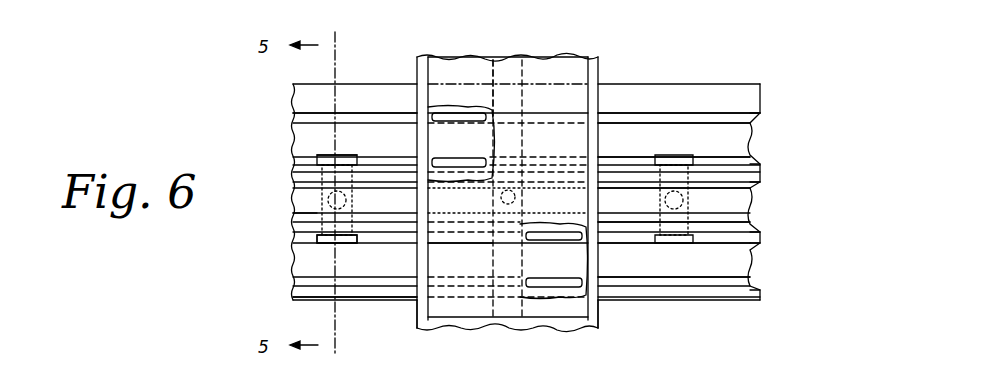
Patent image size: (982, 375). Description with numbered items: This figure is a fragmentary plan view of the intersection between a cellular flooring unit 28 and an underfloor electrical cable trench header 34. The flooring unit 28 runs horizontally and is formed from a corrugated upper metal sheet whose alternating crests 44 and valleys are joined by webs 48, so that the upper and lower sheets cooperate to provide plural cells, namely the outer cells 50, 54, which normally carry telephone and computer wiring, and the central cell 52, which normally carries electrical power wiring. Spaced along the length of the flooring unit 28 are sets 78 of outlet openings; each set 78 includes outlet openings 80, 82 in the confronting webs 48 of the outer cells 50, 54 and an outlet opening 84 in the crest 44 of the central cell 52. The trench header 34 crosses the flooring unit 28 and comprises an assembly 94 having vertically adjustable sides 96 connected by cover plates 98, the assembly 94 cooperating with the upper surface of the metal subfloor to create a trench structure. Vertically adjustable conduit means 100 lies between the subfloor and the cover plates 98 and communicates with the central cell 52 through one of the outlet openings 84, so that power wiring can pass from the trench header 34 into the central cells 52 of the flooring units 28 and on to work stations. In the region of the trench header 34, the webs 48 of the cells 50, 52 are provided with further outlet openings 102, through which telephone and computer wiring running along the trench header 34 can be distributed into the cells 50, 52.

The cellular flooring unit 28 is at (765, 90).
The trench header 34 is at (608, 52).
The crest 44 is at (294, 212).
The web 48 is at (760, 110).
The outer cell 50 is at (765, 266).
The central cell 52 is at (765, 204).
The outer cell 54 is at (765, 142).
The set of outlet openings 78 is at (355, 155).
The outlet opening 80 is at (330, 242).
The outlet opening 82 is at (322, 154).
The outlet opening 84 is at (330, 200).
The assembly 94 is at (466, 58).
The vertically adjustable side 96 is at (418, 318).
The cover plate 98 is at (430, 230).
The conduit means 100 is at (518, 78).
The outlet opening 102 is at (472, 162).